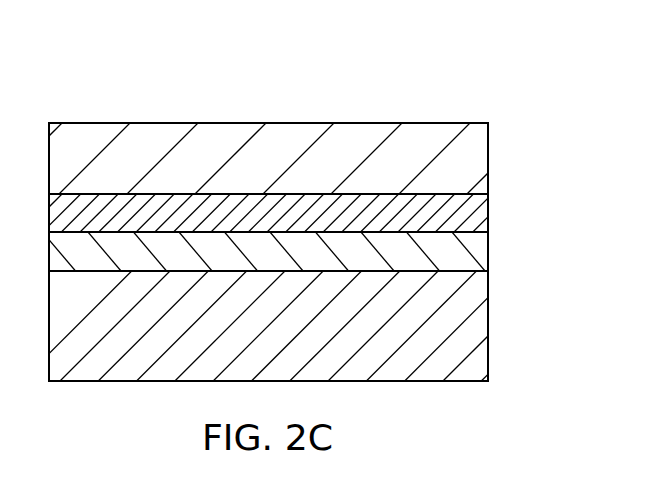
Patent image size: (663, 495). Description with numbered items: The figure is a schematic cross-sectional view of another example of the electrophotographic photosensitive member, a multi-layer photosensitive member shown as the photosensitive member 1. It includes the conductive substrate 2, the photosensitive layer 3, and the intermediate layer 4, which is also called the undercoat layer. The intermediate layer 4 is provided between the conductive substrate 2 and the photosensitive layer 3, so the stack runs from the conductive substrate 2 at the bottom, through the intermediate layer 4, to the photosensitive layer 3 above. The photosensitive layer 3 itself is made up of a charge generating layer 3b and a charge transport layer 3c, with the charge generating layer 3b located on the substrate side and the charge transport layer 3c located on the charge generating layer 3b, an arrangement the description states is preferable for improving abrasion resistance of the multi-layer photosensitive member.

The photosensitive member 1 is at (462, 102).
The conductive substrate 2 is at (470, 331).
The photosensitive layer 3 is at (302, 177).
The charge generating layer 3b is at (292, 210).
The charge transport layer 3c is at (470, 166).
The intermediate layer 4 is at (475, 257).